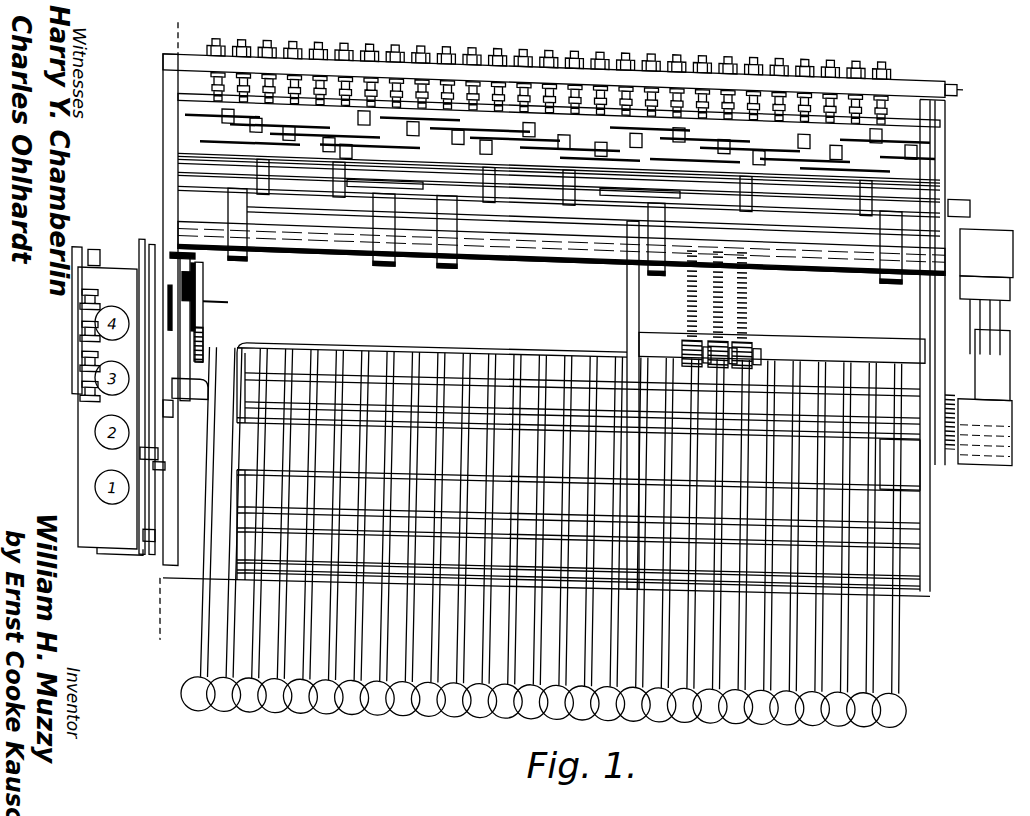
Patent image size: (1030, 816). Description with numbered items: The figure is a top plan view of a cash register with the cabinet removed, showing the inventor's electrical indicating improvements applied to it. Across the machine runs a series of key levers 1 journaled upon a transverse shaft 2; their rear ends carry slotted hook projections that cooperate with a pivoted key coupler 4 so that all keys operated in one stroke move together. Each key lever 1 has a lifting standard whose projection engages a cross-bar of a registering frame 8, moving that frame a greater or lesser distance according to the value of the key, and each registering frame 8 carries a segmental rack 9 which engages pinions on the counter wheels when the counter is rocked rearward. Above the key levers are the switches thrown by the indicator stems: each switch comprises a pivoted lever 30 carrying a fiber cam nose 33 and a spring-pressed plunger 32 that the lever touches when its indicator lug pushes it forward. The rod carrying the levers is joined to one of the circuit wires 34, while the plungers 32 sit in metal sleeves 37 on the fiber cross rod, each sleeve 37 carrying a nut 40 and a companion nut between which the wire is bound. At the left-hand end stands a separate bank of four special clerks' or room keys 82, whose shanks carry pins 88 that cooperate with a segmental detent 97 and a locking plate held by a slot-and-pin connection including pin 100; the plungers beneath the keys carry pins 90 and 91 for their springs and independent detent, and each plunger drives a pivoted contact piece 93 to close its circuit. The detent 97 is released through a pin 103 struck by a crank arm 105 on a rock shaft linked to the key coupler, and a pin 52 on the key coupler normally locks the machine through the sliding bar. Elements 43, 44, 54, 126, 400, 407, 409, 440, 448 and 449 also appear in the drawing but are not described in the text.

The key levers 1 is at (768, 711).
The transverse shaft 2 is at (540, 339).
The key coupler 4 is at (584, 404).
The registering frame 8 is at (564, 196).
The segmental rack 9 is at (745, 288).
The pivoted lever 30 is at (700, 96).
The spring-pressed plunger 32 is at (552, 91).
The fiber cam nose 33 is at (391, 85).
The circuit wire 34 is at (972, 63).
The metal sleeve 37 is at (722, 97).
The nut 40 is at (856, 42).
The lever 43 is at (560, 141).
The valve 44 is at (550, 90).
The pin 52 is at (203, 268).
The bar 54 is at (195, 281).
The special keys 82 is at (100, 492).
The pin 88 is at (160, 454).
The pin 90 is at (152, 245).
The pin 91 is at (82, 364).
The pivoted contact piece 93 is at (90, 405).
The segmental detent 97 is at (142, 245).
The pin 100 is at (155, 536).
The pin 103 is at (165, 468).
The crank arm 105 is at (100, 455).
The bar 126 is at (80, 316).
The bracket 400 is at (200, 398).
The lug 407 is at (175, 440).
The rack 409 is at (205, 350).
The spring 440 is at (230, 320).
The bar 448 is at (191, 296).
The bar 449 is at (190, 311).